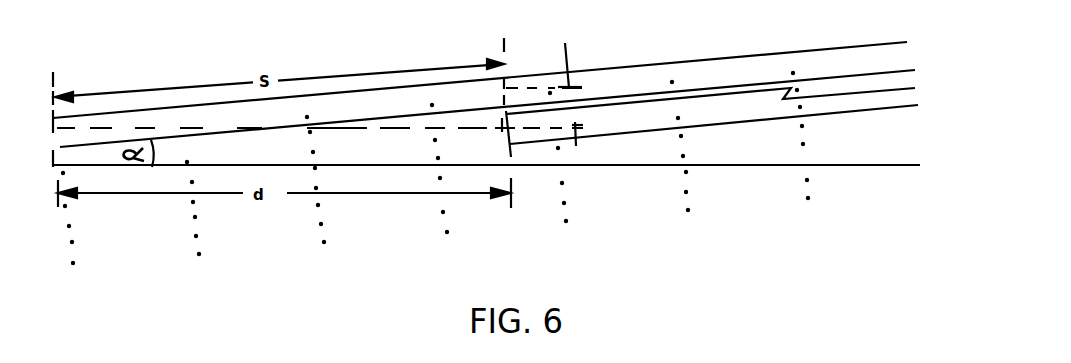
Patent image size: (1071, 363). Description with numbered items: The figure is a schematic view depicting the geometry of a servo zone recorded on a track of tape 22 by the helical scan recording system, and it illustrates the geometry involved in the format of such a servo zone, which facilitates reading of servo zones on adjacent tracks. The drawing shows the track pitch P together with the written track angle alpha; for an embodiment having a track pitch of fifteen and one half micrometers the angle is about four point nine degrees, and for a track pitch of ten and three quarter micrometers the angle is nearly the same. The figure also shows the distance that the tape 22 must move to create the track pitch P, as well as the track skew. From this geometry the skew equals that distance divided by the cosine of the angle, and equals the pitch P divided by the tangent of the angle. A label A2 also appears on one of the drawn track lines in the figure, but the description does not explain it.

The tape 22 is at (698, 164).
The track pitch P is at (566, 33).
The segment A2 is at (693, 82).